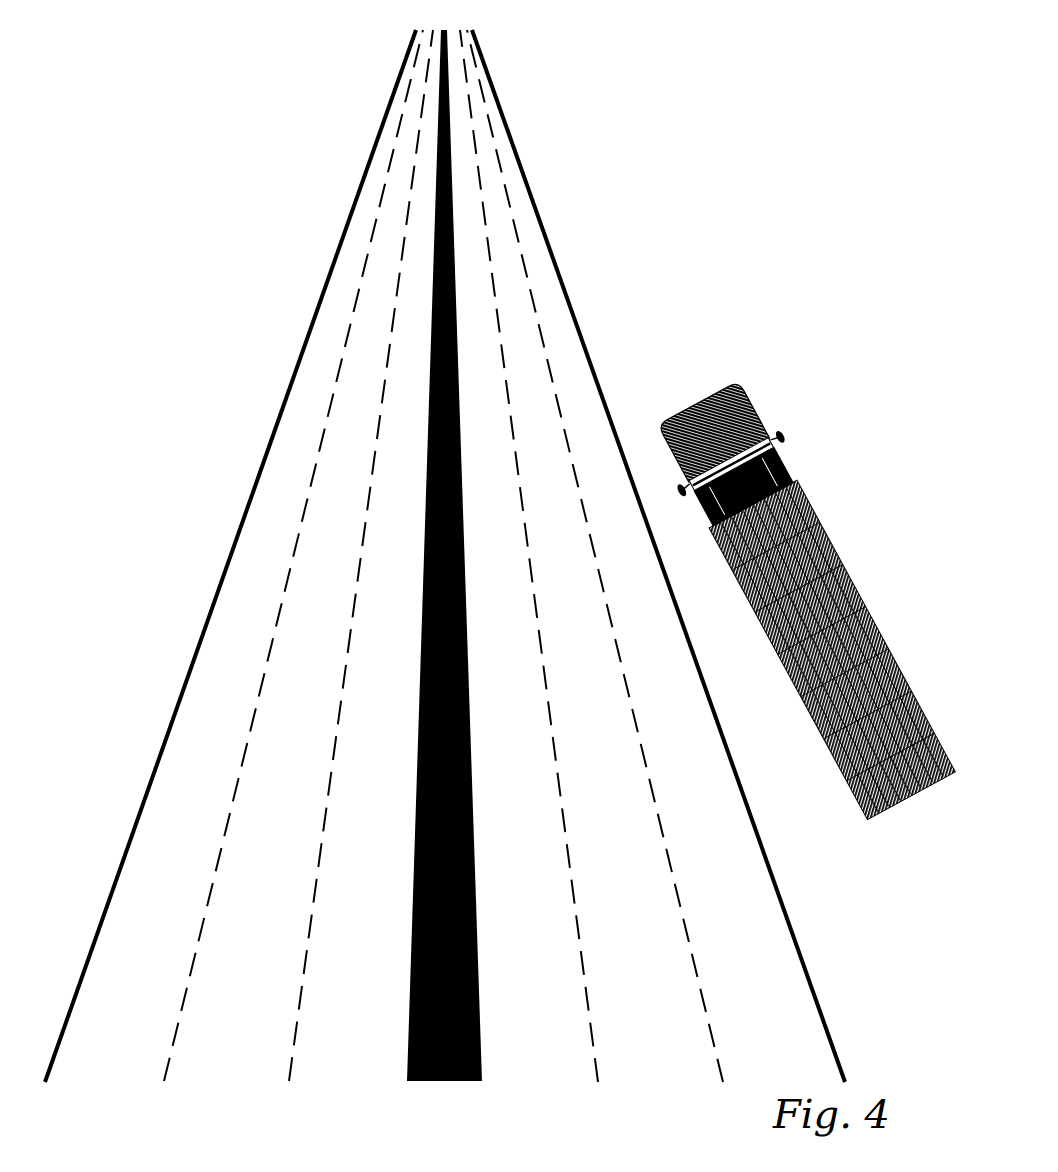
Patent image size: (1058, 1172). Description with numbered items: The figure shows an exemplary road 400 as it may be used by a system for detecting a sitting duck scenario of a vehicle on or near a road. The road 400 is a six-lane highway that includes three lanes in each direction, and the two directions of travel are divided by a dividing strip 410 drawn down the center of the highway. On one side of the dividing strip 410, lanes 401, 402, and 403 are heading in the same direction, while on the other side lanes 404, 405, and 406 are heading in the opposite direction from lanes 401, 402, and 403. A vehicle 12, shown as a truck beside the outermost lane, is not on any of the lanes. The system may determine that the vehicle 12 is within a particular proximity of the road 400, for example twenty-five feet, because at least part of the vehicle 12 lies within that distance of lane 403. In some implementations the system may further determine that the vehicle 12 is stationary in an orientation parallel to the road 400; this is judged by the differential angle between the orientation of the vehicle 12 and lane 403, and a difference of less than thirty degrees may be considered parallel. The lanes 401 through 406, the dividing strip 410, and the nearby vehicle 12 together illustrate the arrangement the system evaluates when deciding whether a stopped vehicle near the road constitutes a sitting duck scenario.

The road 400 is at (736, 123).
The lane 401 is at (553, 1051).
The lane 402 is at (675, 1051).
The lane 403 is at (783, 1051).
The lane 404 is at (379, 964).
The lane 405 is at (269, 964).
The lane 406 is at (148, 964).
The dividing strip 410 is at (479, 1121).
The vehicle 12 is at (791, 384).